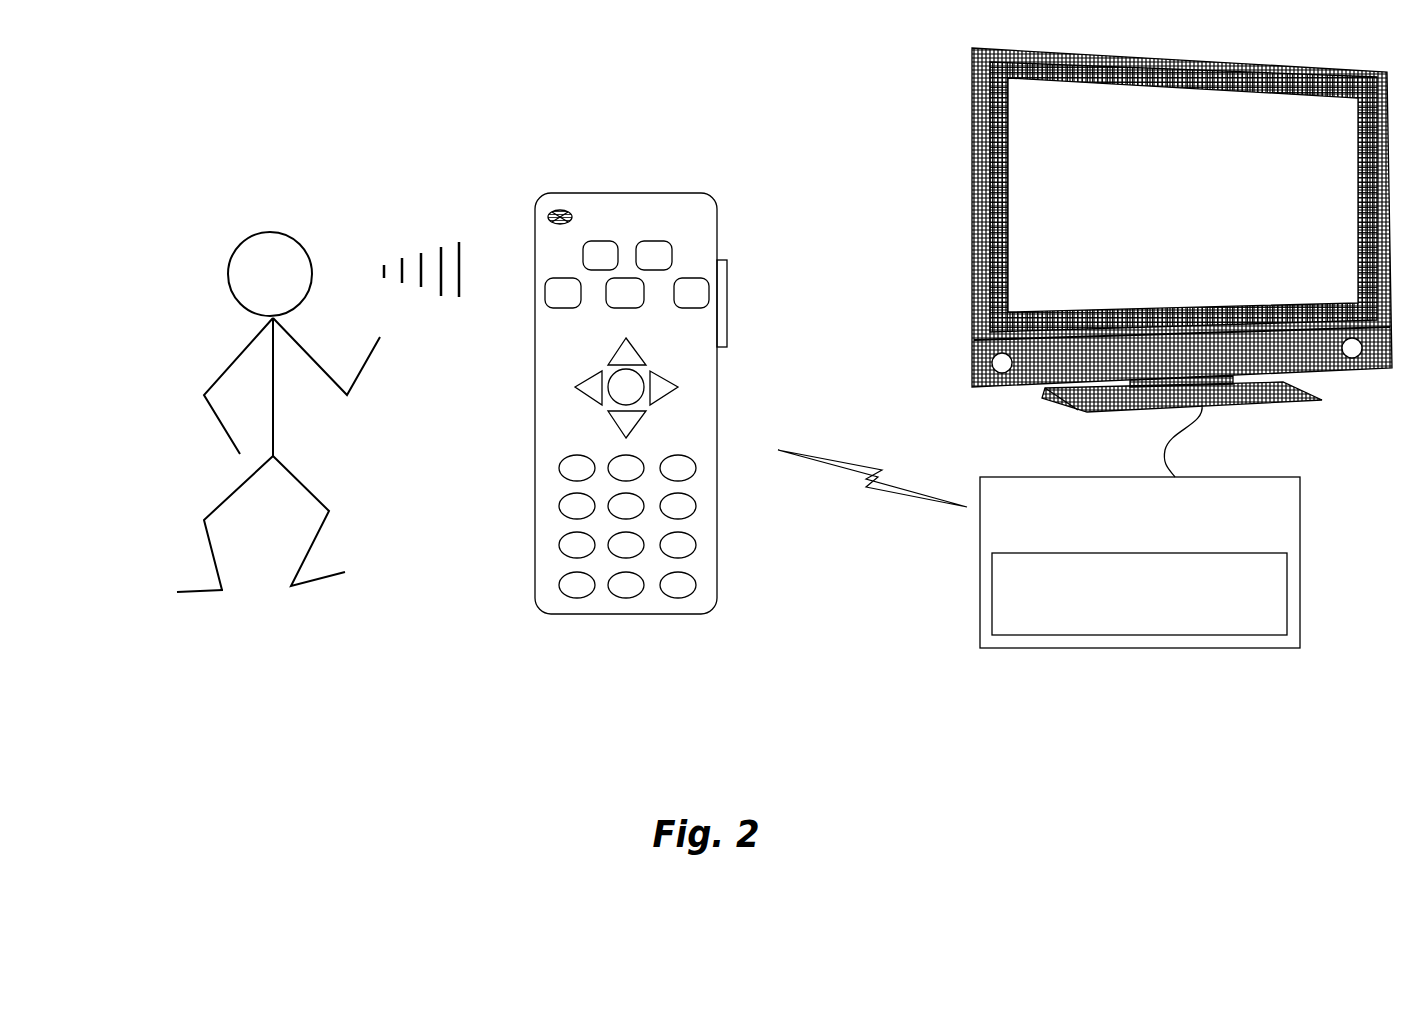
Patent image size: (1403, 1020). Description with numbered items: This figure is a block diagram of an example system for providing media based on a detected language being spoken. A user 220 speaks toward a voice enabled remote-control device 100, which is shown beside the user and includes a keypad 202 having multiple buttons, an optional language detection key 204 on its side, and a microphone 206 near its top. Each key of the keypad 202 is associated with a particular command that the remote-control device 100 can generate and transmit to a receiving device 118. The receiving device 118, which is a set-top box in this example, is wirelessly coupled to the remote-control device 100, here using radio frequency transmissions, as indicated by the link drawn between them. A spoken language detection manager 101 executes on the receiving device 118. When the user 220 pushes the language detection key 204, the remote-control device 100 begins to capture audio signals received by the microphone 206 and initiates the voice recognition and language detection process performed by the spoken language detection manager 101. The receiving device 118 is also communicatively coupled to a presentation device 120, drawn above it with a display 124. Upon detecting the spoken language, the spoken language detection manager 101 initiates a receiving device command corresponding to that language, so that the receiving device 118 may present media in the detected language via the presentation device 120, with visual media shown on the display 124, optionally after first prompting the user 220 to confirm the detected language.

The voice enabled remote-control device 100 is at (638, 376).
The spoken language detection manager 101 is at (1228, 621).
The receiving device 118 is at (1178, 549).
The presentation device 120 is at (1182, 244).
The display 124 is at (1166, 302).
The keypad 202 is at (691, 434).
The language detection key 204 is at (723, 284).
The microphone 206 is at (550, 213).
The user 220 is at (307, 226).